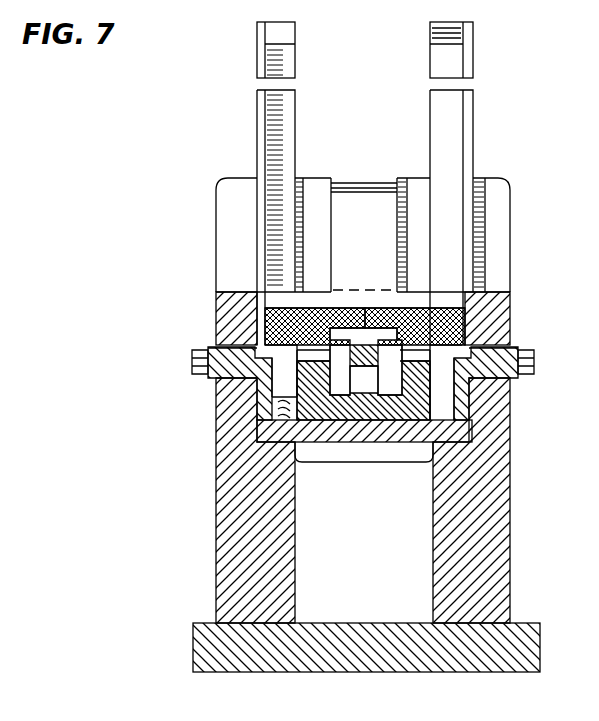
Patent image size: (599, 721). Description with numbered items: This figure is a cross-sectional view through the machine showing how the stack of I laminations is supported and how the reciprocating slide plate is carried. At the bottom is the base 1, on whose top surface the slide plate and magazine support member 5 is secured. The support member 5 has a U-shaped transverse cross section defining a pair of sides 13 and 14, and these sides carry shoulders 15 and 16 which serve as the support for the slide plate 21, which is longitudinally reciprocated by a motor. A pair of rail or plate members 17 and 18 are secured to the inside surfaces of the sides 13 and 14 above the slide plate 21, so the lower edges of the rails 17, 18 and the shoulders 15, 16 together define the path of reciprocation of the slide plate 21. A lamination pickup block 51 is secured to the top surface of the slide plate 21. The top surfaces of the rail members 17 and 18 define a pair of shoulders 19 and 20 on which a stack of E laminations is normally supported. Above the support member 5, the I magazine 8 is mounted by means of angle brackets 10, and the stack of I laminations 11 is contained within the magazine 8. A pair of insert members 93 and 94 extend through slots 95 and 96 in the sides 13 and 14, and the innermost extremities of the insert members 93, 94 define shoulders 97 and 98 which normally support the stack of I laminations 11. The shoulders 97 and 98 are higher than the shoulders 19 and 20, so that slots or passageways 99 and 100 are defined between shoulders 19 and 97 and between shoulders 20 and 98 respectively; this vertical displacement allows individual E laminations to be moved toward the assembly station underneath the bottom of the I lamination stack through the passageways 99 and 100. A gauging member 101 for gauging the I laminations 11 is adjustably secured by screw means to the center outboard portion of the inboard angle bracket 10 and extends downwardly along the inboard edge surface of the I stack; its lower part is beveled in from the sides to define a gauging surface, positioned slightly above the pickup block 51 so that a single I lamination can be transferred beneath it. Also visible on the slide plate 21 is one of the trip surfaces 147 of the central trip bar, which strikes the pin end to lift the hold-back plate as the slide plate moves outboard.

The base 1 is at (366, 659).
The slide plate and magazine support member 5 is at (367, 525).
The I magazine 8 is at (288, 72).
The angle bracket 10 is at (500, 204).
The I laminations 11 is at (432, 318).
The side 13 is at (256, 525).
The side 14 is at (476, 525).
The shoulder 15 is at (257, 444).
The shoulder 16 is at (445, 444).
The rail or plate member 17 is at (256, 398).
The rail or plate member 18 is at (455, 410).
The shoulder 19 is at (284, 373).
The shoulder 20 is at (443, 385).
The slide plate 21 is at (364, 440).
The lamination pickup block 51 is at (362, 419).
The insert member 93 is at (208, 350).
The insert member 94 is at (518, 350).
The slot 95 is at (216, 378).
The slot 96 is at (510, 378).
The shoulder 97 is at (315, 326).
The shoulder 98 is at (415, 326).
The slot or passageway 99 is at (292, 364).
The slot or passageway 100 is at (445, 355).
The gauging member 101 is at (381, 251).
The trip surface 147 is at (292, 408).